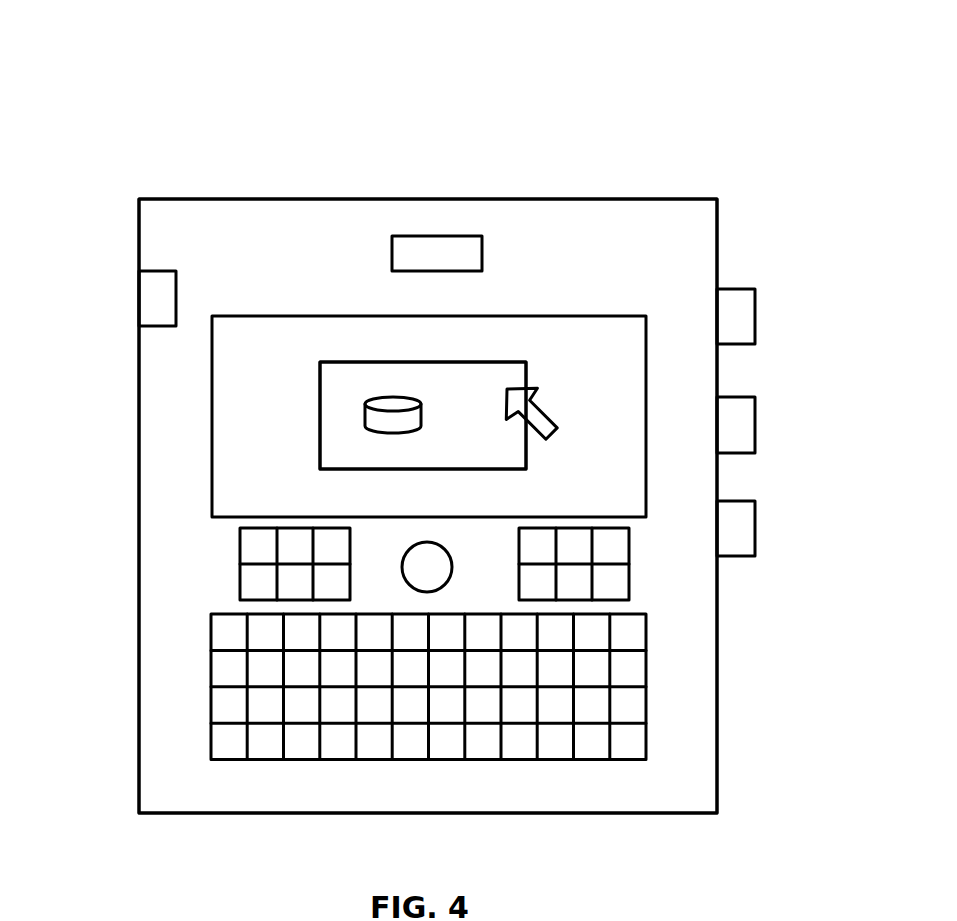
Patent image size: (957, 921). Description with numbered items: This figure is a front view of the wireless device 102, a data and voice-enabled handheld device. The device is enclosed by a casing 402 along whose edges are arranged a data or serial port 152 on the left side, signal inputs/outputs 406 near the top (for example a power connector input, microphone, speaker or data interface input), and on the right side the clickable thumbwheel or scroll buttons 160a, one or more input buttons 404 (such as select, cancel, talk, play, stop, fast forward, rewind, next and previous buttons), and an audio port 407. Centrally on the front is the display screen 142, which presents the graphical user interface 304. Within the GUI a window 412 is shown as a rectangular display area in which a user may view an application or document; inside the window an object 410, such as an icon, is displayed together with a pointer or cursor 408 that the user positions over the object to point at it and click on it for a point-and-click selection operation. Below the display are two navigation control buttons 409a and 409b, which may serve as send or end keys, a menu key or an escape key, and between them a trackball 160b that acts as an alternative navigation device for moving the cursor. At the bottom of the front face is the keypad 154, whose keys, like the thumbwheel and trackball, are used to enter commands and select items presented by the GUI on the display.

The wireless device 102 is at (676, 86).
The casing 402 is at (283, 235).
The signal inputs/outputs 406 is at (446, 234).
The data or serial port 152 is at (158, 299).
The display screen 142 is at (211, 361).
The graphical user interface 304 is at (230, 395).
The object 410 is at (364, 414).
The window 412 is at (483, 381).
The pointer or cursor 408 is at (555, 428).
The navigation control button 409a is at (240, 544).
The navigation control button 409b is at (629, 555).
The trackball 160b is at (432, 588).
The keypad 154 is at (646, 668).
The clickable thumbwheel or scroll buttons 160a is at (755, 320).
The input buttons 404 is at (755, 430).
The audio port 407 is at (755, 537).